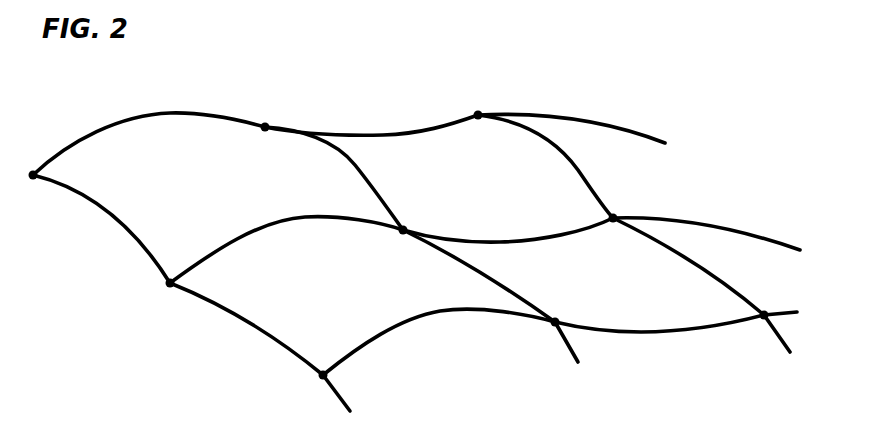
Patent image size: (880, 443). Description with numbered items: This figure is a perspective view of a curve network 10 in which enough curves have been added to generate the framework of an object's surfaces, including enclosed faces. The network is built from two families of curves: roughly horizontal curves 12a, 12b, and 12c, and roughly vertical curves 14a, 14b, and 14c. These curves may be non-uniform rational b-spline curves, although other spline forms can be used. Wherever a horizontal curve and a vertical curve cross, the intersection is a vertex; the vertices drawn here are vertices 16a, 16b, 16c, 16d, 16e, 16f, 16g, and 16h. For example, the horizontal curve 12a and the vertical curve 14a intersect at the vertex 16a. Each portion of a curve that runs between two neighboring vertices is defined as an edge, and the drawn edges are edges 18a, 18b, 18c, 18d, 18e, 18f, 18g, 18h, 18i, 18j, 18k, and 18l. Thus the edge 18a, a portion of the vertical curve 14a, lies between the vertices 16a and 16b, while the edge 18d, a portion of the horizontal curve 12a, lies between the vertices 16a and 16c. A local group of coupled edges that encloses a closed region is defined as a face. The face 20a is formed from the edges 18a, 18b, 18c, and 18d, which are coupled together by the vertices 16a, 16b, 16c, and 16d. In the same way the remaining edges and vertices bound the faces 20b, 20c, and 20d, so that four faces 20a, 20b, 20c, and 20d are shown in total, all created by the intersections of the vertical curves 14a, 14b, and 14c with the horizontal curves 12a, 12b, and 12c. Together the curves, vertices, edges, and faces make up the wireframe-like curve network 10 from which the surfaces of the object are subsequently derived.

The curve network 10 is at (345, 65).
The horizontal curve 12a is at (585, 118).
The horizontal curve 12b is at (742, 230).
The horizontal curve 12c is at (780, 310).
The vertical curve 14a is at (342, 402).
The vertical curve 14b is at (580, 358).
The vertical curve 14c is at (783, 336).
The vertex 16a is at (38, 176).
The vertex 16b is at (176, 284).
The vertex 16c is at (408, 230).
The vertex 16d is at (265, 127).
The vertex 16e is at (330, 376).
The vertex 16f is at (562, 322).
The vertex 16g is at (478, 115).
The vertex 16h is at (614, 219).
The edge 18a is at (120, 212).
The edge 18b is at (298, 222).
The edge 18c is at (367, 173).
The edge 18d is at (163, 114).
The edge 18e is at (270, 335).
The edge 18f is at (426, 316).
The edge 18g is at (474, 270).
The edge 18h is at (383, 135).
The edge 18i is at (704, 272).
The edge 18j is at (585, 181).
The edge 18k is at (686, 333).
The edge 18l is at (554, 240).
The face 20a is at (210, 200).
The face 20b is at (360, 295).
The face 20c is at (455, 177).
The face 20d is at (590, 280).